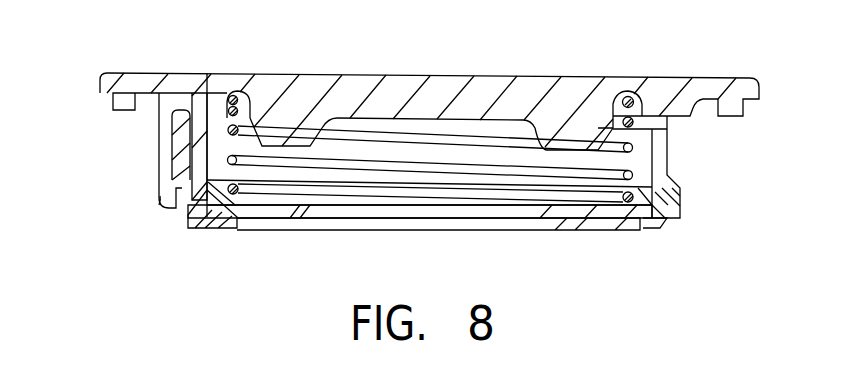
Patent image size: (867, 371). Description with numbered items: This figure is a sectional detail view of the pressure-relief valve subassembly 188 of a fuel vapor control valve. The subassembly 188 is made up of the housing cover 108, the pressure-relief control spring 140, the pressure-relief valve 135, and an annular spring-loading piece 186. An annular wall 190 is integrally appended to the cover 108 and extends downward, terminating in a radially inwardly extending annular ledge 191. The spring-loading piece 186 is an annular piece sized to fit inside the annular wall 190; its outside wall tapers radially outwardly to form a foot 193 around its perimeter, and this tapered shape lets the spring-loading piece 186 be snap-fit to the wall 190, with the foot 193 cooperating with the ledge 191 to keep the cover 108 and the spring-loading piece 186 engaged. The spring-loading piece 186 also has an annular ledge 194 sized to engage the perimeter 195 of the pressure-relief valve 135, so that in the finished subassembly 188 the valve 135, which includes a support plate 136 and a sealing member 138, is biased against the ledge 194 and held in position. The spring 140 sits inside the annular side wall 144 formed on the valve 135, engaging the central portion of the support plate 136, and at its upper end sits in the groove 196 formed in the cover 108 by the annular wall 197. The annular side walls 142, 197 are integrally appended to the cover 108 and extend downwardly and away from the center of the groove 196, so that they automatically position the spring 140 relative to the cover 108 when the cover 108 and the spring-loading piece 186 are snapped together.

The housing cover 108 is at (382, 74).
The pressure-relief valve subassembly 188 is at (97, 79).
The spring-loading piece 186 is at (206, 73).
The annular wall 190 is at (160, 141).
The foot 193 is at (173, 186).
The annular ledge 191 is at (158, 185).
The groove 196 is at (205, 122).
The annular side wall 144 is at (222, 130).
The perimeter 195 is at (217, 220).
The annular side wall 142 is at (605, 90).
The pressure-relief control spring 140 is at (513, 198).
The annular ledge 194 is at (652, 179).
The annular wall 197 is at (634, 125).
The support plate 136 is at (325, 208).
The sealing member 138 is at (583, 223).
The pressure-relief valve 135 is at (622, 243).